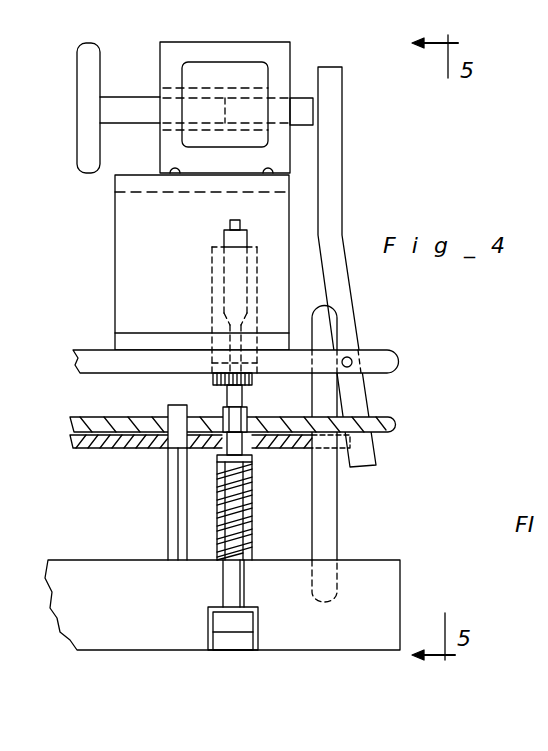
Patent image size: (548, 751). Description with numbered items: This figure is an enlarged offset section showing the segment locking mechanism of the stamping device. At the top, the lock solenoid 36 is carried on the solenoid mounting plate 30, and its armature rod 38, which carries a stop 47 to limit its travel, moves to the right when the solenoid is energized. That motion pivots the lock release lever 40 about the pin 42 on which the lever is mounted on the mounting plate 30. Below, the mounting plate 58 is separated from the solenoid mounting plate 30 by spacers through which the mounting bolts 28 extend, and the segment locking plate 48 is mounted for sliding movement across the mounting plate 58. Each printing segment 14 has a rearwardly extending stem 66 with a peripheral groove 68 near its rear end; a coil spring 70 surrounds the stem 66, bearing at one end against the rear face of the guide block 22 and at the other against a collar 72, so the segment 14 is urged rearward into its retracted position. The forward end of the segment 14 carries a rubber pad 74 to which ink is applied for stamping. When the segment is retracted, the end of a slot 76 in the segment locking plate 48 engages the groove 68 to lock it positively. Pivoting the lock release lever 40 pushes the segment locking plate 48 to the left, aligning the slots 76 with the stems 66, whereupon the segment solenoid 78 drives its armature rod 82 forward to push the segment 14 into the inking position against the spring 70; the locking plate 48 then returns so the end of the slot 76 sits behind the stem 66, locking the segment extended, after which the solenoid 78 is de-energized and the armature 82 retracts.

The printing segment 14 is at (248, 615).
The guide block 22 is at (353, 567).
The mounting bolt 28 is at (328, 482).
The solenoid mounting plate 30 is at (90, 352).
The lock solenoid 36 is at (193, 70).
The armature rod 38 is at (302, 103).
The lock release lever 40 is at (335, 133).
The pin 42 is at (350, 358).
The stop 47 is at (87, 52).
The segment locking plate 48 is at (100, 440).
The mounting plate 58 is at (103, 420).
The stem 66 is at (175, 508).
The peripheral groove 68 is at (170, 446).
The coil spring 70 is at (247, 528).
The collar 72 is at (250, 463).
The pad 74 is at (222, 638).
The slot 76 is at (186, 452).
The solenoid 78 is at (212, 300).
The armature rod 82 is at (237, 394).